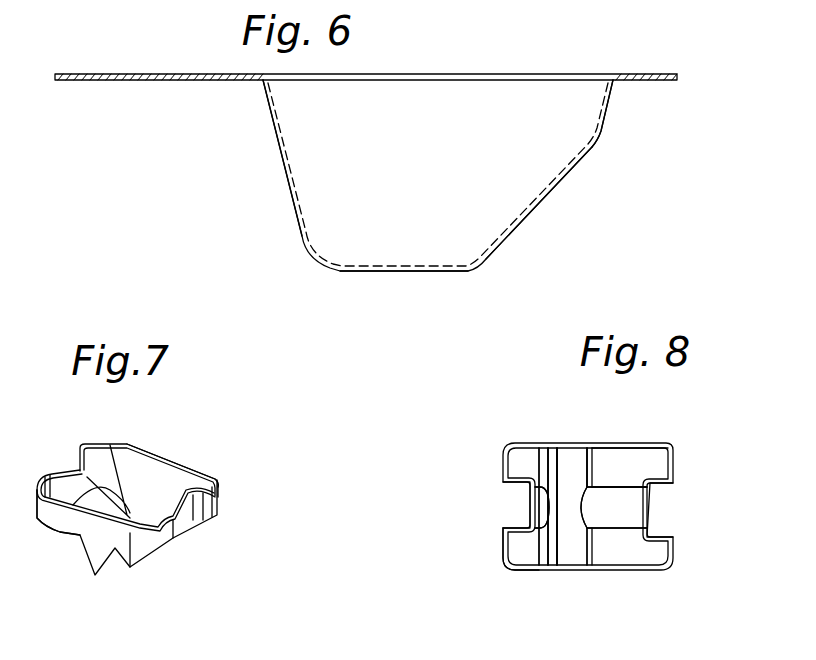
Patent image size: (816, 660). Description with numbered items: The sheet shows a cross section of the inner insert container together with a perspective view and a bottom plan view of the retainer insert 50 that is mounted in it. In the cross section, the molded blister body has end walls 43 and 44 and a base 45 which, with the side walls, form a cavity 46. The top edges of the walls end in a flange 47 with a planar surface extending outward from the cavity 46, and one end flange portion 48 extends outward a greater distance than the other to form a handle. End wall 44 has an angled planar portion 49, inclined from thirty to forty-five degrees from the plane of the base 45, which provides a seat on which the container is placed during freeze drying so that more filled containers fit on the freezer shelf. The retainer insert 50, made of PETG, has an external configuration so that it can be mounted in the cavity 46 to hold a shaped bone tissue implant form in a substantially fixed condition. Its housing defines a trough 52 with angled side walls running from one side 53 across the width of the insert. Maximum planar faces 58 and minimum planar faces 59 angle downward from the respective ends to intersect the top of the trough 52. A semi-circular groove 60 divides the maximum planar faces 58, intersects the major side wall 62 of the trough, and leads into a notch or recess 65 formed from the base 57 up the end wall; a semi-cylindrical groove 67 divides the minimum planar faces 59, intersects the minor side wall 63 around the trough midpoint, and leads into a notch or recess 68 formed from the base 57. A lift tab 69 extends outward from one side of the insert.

In FIG. 6, the end wall 43 is at (290, 193).
In FIG. 6, the end wall 44 is at (607, 124).
In FIG. 6, the base 45 is at (387, 273).
In FIG. 6, the cavity 46 is at (443, 176).
In FIG. 6, the flange 47 is at (647, 76).
In FIG. 6, the end flange portion 48 is at (123, 81).
In FIG. 6, the angled planar portion 49 is at (547, 197).
In FIG. 7, the retainer insert 50 is at (178, 557).
In FIG. 8, the retainer insert 50 is at (665, 584).
In FIG. 8, the trough 52 is at (548, 455).
In FIG. 8, the side 53 is at (573, 468).
In FIG. 7, the base 57 is at (180, 460).
In FIG. 8, the maximum planar faces 58 is at (648, 472).
In FIG. 8, the minimum planar faces 59 is at (523, 547).
In FIG. 8, the semi-circular groove 60 is at (632, 515).
In FIG. 8, the major side wall 62 is at (552, 525).
In FIG. 8, the minor side wall 63 is at (552, 472).
In FIG. 8, the notch or recess 65 is at (657, 502).
In FIG. 8, the semi-cylindrical groove 67 is at (537, 508).
In FIG. 8, the notch or recess 68 is at (530, 495).
In FIG. 7, the lift tab 69 is at (70, 525).